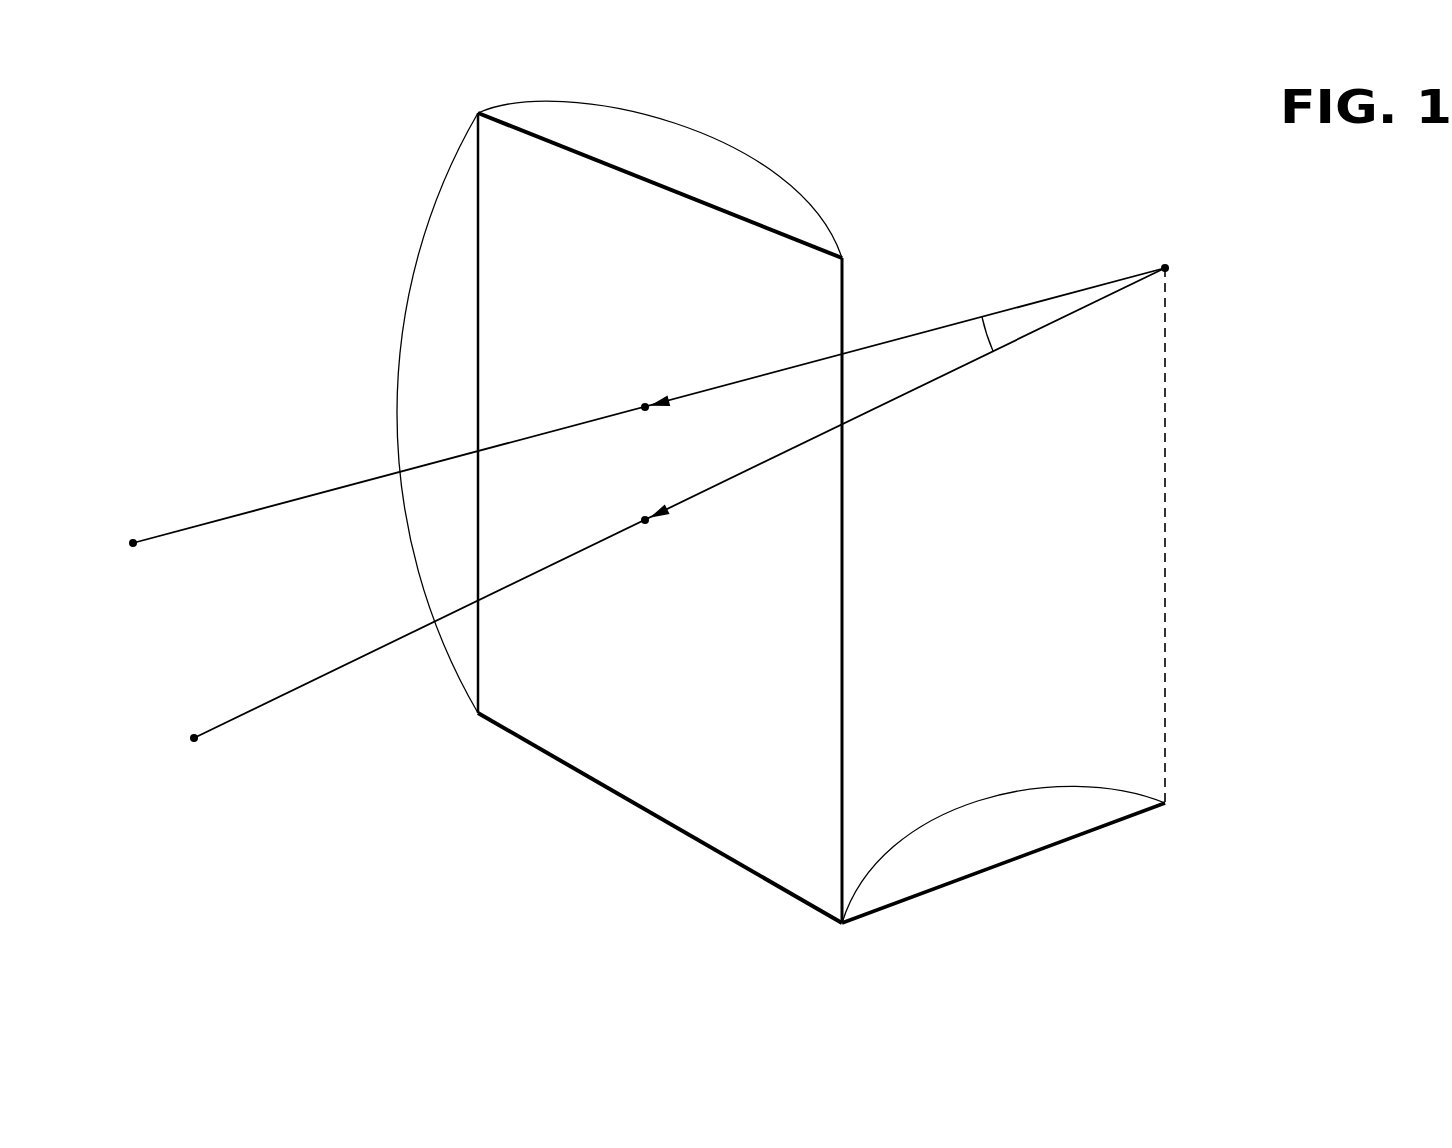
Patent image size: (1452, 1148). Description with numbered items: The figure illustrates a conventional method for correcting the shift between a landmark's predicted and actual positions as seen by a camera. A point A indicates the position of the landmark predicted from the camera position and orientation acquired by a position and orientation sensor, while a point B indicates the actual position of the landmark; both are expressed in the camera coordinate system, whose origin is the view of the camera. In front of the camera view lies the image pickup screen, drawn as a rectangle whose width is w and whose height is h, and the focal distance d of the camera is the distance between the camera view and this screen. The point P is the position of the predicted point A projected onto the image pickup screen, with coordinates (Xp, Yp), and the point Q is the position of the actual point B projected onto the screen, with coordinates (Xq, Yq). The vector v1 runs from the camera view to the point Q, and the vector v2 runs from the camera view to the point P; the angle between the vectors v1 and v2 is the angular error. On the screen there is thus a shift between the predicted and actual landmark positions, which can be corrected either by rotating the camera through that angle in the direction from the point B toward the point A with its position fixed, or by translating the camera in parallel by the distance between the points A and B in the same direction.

The point A is at (133, 540).
The point B is at (194, 745).
The point P is at (644, 404).
The point Q is at (646, 523).
The vector v1 is at (677, 522).
The vector v2 is at (666, 385).
The width of the image pickup screen w is at (660, 173).
The height of the image pickup screen h is at (422, 413).
The focal distance d is at (1003, 847).